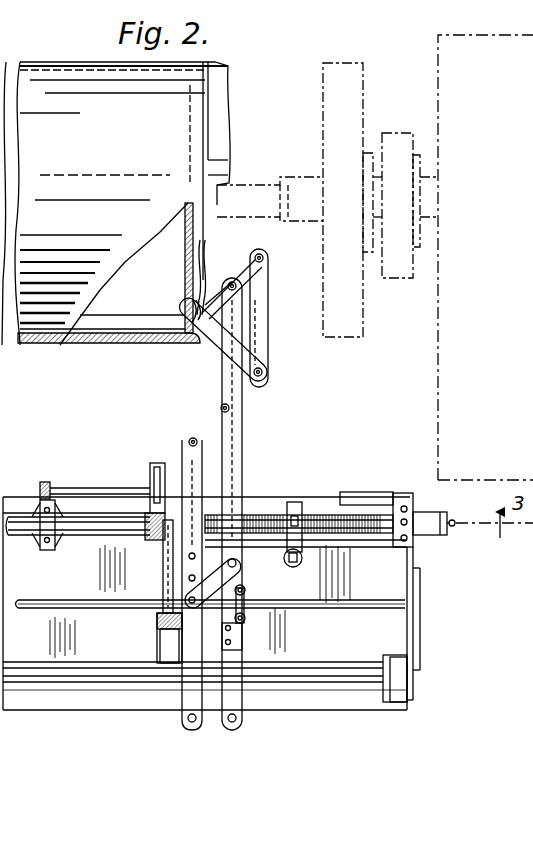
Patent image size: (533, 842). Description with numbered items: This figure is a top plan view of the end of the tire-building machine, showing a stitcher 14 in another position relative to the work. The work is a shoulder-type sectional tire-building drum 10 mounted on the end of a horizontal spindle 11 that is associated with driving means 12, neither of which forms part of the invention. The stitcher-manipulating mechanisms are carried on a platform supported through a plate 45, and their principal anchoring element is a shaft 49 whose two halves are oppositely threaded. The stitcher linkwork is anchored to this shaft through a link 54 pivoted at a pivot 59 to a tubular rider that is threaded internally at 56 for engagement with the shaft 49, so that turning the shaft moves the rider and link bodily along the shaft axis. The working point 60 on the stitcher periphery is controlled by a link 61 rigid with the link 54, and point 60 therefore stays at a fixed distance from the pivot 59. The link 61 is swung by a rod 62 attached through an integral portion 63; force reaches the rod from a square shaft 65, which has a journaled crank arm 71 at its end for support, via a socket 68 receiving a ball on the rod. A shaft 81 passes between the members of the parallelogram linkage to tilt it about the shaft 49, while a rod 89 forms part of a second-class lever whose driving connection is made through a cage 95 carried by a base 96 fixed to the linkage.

The tire-building drum 10 is at (185, 268).
The spindle 11 is at (262, 182).
The driving means 12 is at (438, 76).
The stitcher 14 is at (215, 280).
The working point 60 is at (200, 316).
The link 61 is at (184, 460).
The plate 45 is at (124, 700).
The shaft 49 is at (72, 528).
The socket 68 is at (148, 500).
The rod 62 is at (165, 575).
The portion 63 is at (160, 665).
The link 54 is at (266, 552).
The threaded portion 56 is at (297, 504).
The pivot 59 is at (300, 564).
The square shaft 65 is at (370, 494).
The crank arm 71 is at (402, 498).
The rod 89 is at (352, 600).
The shaft 81 is at (340, 668).
The cage 95 is at (244, 616).
The base 96 is at (238, 634).